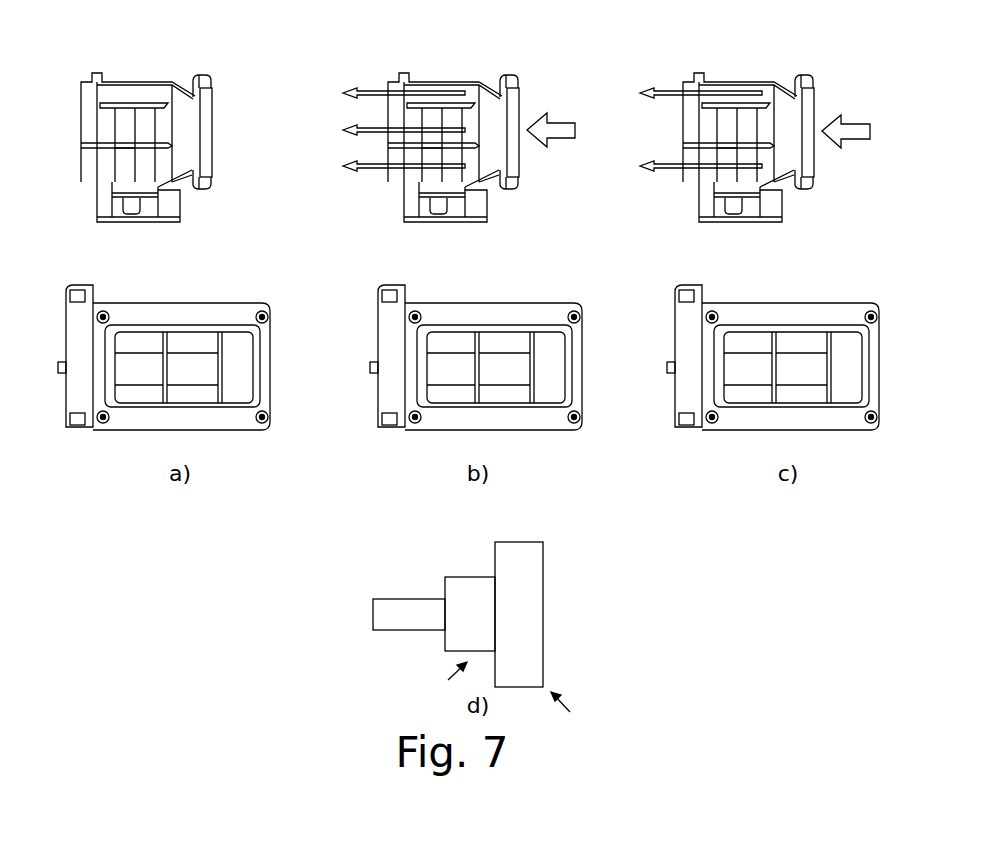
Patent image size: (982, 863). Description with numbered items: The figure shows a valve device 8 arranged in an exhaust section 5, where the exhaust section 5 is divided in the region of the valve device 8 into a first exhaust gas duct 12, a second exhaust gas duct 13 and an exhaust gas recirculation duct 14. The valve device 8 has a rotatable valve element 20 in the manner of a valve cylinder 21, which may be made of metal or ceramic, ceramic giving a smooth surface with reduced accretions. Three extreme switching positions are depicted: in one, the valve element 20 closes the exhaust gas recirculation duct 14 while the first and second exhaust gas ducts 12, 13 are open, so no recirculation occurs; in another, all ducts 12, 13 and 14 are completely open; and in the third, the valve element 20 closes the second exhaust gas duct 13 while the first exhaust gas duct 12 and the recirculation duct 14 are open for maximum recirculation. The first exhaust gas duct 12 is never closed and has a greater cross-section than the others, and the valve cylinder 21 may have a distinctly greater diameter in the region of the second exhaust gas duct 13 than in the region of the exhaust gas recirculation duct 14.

The exhaust section 5 is at (220, 141).
The valve device 8 is at (217, 81).
The first exhaust gas duct 12 is at (428, 86).
The second exhaust gas duct 13 is at (400, 114).
The exhaust gas recirculation duct 14 is at (393, 156).
The rotatable valve element 20 is at (548, 607).
The valve cylinder 21 is at (443, 634).